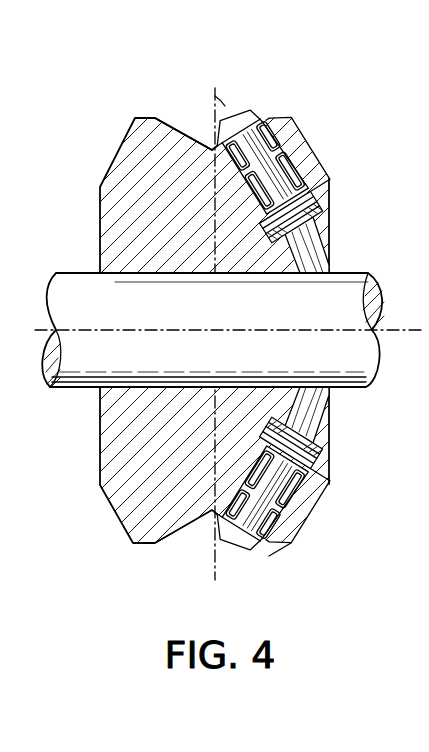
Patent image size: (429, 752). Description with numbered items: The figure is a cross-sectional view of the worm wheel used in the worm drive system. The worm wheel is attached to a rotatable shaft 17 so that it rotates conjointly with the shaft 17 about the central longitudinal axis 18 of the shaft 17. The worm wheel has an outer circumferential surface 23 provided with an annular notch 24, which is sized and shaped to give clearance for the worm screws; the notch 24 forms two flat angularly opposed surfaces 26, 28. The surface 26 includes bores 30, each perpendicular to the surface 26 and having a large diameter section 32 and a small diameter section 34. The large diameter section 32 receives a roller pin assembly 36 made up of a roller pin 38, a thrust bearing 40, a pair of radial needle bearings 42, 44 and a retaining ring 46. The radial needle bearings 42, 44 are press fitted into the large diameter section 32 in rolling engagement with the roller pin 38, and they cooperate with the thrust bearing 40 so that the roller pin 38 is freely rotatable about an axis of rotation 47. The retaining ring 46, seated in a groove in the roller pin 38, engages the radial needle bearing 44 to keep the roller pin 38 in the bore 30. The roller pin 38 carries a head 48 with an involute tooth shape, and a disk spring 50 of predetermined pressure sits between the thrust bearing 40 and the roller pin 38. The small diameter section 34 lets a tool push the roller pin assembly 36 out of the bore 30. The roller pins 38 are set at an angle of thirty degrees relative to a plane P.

The shaft 17 is at (357, 357).
The central longitudinal axis 18 is at (392, 330).
The outer circumferential surface 23 is at (140, 549).
The annular notch 24 is at (165, 112).
The flat angularly opposed surface 26 is at (268, 558).
The flat angularly opposed surface 28 is at (180, 132).
The bore 30 is at (303, 160).
The large diameter section 32 is at (303, 195).
The small diameter section 34 is at (315, 258).
The roller pin assembly 36 is at (264, 111).
The roller pin 38 is at (272, 140).
The thrust bearing 40 is at (320, 215).
The radial needle bearing 42 is at (297, 533).
The radial needle bearing 44 is at (310, 502).
The retaining ring 46 is at (324, 484).
The axis of rotation 47 is at (224, 106).
The head 48 is at (240, 552).
The disk spring 50 is at (324, 468).
The plane P is at (213, 549).